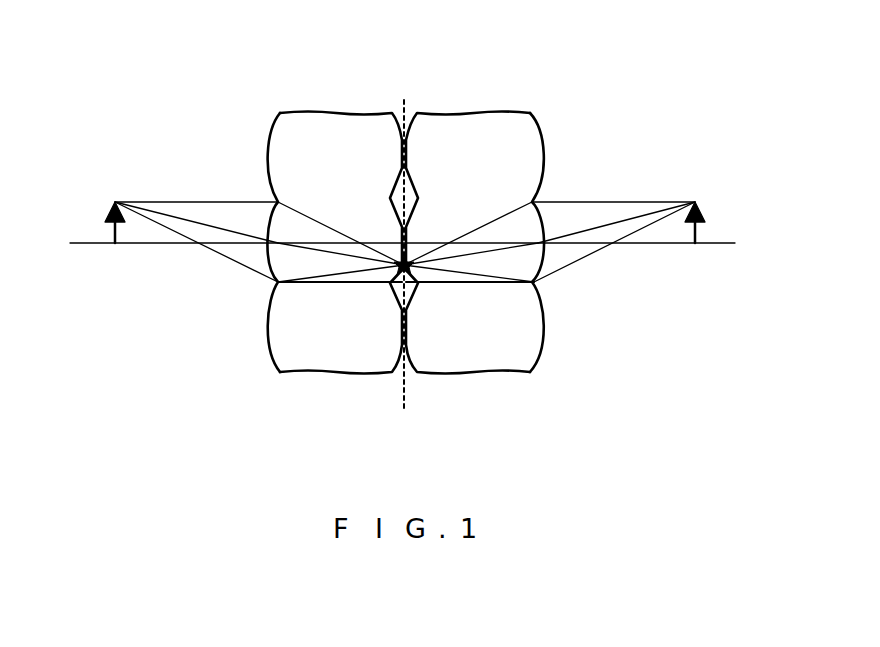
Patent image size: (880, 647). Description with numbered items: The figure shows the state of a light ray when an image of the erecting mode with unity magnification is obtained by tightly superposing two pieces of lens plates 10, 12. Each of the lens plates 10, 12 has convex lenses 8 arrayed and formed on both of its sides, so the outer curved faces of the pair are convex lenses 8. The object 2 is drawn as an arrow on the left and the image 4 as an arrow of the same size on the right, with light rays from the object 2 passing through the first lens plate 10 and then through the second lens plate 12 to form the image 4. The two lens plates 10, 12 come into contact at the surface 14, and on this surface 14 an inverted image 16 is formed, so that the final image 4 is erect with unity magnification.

The object 2 is at (110, 229).
The image 4 is at (700, 228).
The convex lenses 8 is at (267, 156).
The lens plate 10 is at (336, 106).
The lens plate 12 is at (473, 106).
The surface 14 is at (403, 398).
The inverted image 16 is at (406, 262).